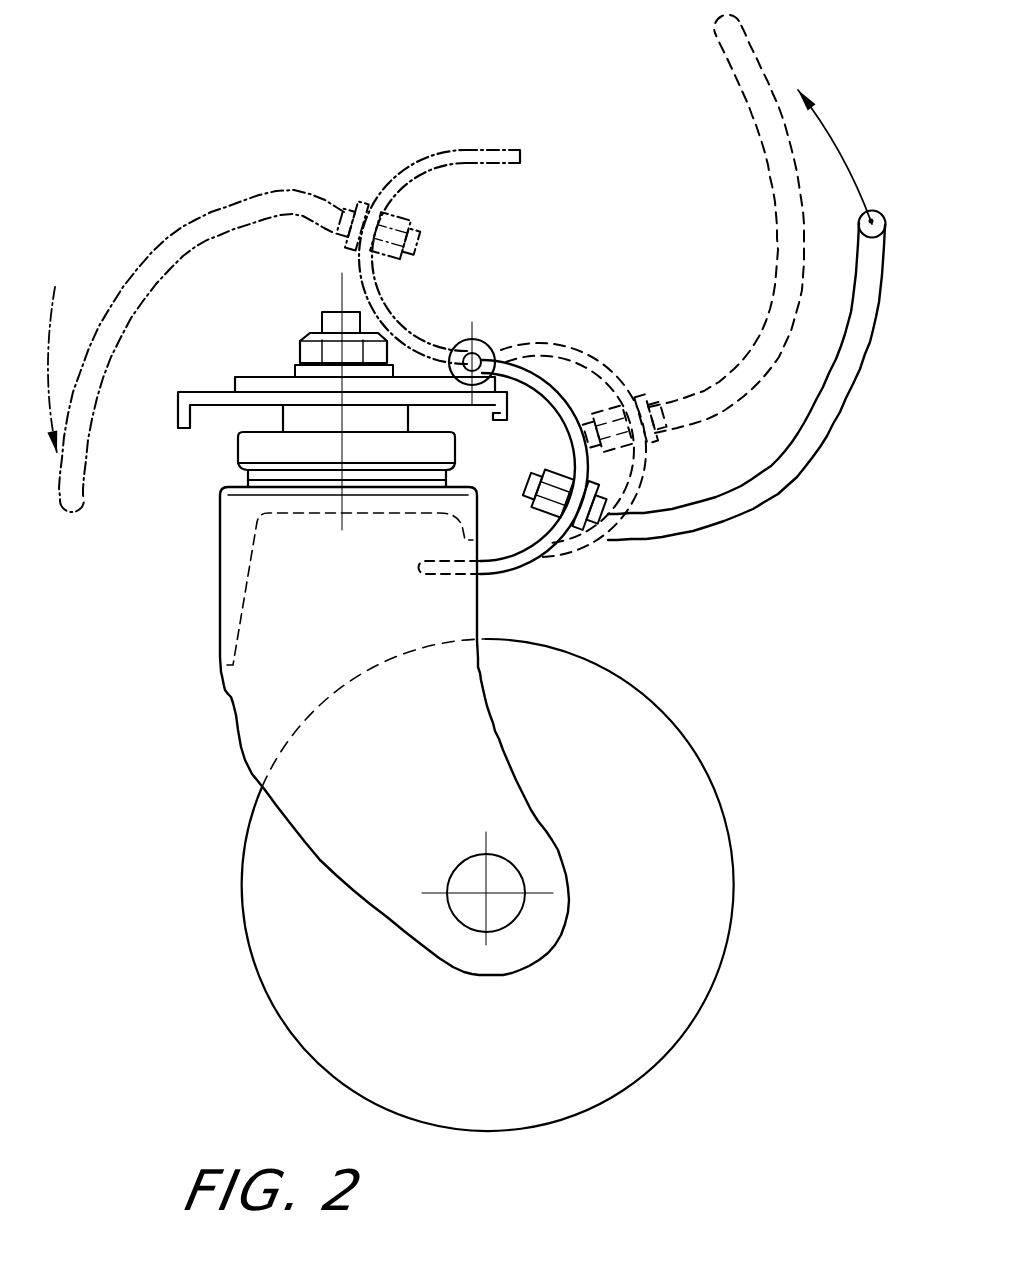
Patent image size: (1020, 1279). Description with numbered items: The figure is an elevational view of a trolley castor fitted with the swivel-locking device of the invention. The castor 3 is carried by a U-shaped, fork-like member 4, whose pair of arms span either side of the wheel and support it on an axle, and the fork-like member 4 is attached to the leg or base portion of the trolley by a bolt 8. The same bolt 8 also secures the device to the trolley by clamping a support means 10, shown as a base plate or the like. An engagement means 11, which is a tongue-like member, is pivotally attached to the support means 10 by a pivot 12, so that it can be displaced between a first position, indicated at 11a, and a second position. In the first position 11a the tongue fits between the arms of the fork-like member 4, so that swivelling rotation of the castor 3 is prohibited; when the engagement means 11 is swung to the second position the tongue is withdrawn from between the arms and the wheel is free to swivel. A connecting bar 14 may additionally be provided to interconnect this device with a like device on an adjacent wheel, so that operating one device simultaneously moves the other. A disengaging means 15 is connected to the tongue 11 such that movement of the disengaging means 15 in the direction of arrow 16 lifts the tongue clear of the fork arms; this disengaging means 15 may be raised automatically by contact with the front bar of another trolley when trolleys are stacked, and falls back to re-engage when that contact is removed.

The castor 3 is at (720, 873).
The fork-like member 4 is at (258, 705).
The bolt 8 is at (307, 352).
The support means 10 is at (250, 380).
The engagement means 11 is at (557, 402).
The first position of engagement means 11a is at (385, 313).
The pivot 12 is at (480, 350).
The connecting bar 14 is at (607, 530).
The disengaging means 15 is at (762, 485).
The arrow 16 is at (837, 143).